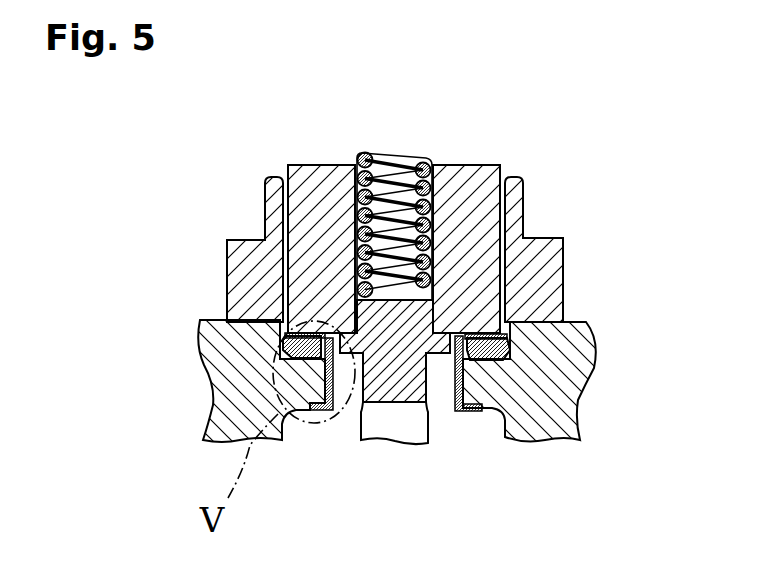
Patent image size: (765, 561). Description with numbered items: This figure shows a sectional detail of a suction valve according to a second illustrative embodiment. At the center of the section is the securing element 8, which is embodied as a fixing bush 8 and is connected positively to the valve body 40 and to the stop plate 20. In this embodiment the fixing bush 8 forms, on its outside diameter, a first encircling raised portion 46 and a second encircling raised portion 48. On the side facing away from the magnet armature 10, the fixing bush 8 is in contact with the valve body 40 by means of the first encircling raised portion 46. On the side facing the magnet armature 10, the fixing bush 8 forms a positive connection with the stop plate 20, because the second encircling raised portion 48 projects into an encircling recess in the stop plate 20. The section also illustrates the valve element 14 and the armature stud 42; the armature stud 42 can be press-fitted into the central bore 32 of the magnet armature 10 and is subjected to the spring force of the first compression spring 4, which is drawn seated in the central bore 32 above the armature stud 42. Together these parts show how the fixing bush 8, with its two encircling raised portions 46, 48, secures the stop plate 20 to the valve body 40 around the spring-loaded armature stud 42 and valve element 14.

The first compression spring 4 is at (505, 170).
The securing element 8 is at (278, 376).
The magnet armature 10 is at (470, 273).
The valve element 14 is at (398, 423).
The stop plate 20 is at (283, 340).
The central bore 32 is at (398, 200).
The valve body 40 is at (240, 294).
The armature stud 42 is at (404, 316).
The first encircling raised portion 46 is at (323, 413).
The second encircling raised portion 48 is at (288, 335).